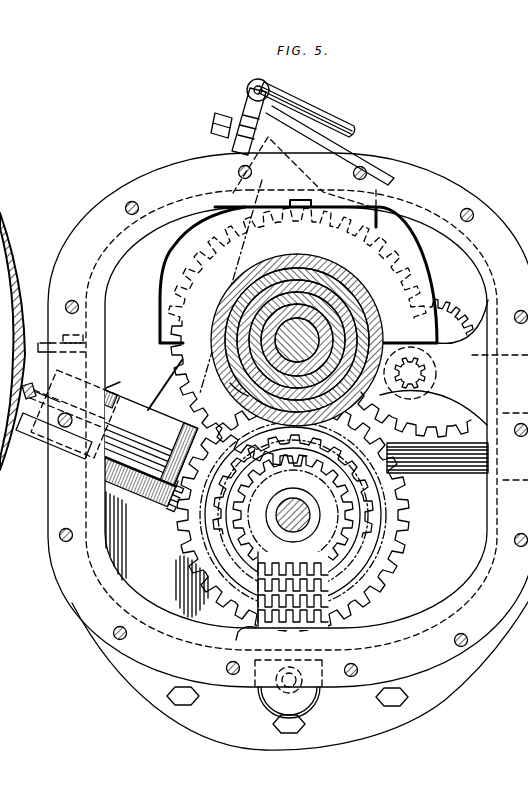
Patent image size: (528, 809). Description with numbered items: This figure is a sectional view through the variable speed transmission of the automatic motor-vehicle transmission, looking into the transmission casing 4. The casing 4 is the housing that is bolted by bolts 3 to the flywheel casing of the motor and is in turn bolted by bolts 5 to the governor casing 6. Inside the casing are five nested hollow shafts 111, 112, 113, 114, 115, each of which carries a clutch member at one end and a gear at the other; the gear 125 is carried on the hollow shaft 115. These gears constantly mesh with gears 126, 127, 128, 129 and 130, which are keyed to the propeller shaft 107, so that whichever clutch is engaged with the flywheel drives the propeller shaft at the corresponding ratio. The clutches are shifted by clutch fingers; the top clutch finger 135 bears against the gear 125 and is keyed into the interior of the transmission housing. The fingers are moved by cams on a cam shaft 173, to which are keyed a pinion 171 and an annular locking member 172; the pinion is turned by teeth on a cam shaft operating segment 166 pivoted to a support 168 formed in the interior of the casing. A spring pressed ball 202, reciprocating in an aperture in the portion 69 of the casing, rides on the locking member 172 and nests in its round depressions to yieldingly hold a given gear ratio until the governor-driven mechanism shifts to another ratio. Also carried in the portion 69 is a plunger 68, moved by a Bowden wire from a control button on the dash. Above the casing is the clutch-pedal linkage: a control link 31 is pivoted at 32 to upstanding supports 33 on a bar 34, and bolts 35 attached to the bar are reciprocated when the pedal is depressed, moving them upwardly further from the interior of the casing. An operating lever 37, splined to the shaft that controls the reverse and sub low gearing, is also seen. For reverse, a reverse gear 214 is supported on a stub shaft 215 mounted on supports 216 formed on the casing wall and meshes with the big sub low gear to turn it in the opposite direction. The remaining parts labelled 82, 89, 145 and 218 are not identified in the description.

The bolts 3 is at (138, 205).
The variable speed transmission casing 4 is at (445, 178).
The bolts 5 is at (200, 700).
The governor casing 6 is at (195, 731).
The control link 31 is at (327, 125).
The pivot 32 is at (258, 83).
The upstanding supports 33 is at (247, 91).
The bar 34 is at (213, 130).
The bolts 35 is at (238, 155).
The operating lever 37 is at (437, 409).
The plunger 68 is at (36, 410).
The portion of the casing 69 is at (38, 430).
The boss 82 is at (312, 700).
The drum flange 89 is at (240, 393).
The propeller shaft 107 is at (312, 517).
The hollow shaft 111 is at (342, 332).
The hollow shaft 112 is at (337, 320).
The hollow shaft 113 is at (333, 306).
The hollow shaft 114 is at (328, 293).
The hollow shaft 115 is at (322, 278).
The gear 125 is at (175, 352).
The gear 126 is at (332, 606).
The gear 127 is at (330, 598).
The gear 128 is at (330, 582).
The gear 129 is at (330, 566).
The gear 130 is at (347, 497).
The clutch finger 135 is at (170, 266).
The drum 145 is at (254, 421).
The cam shaft operating segment 166 is at (168, 523).
The support 168 is at (242, 632).
The pinion 171 is at (100, 483).
The annular locking member 172 is at (133, 434).
The cam shaft 173 is at (170, 372).
The ball 202 is at (122, 386).
The reverse gear 214 is at (440, 303).
The stub shaft 215 is at (421, 376).
The supports 216 is at (450, 396).
The rod 218 is at (284, 140).